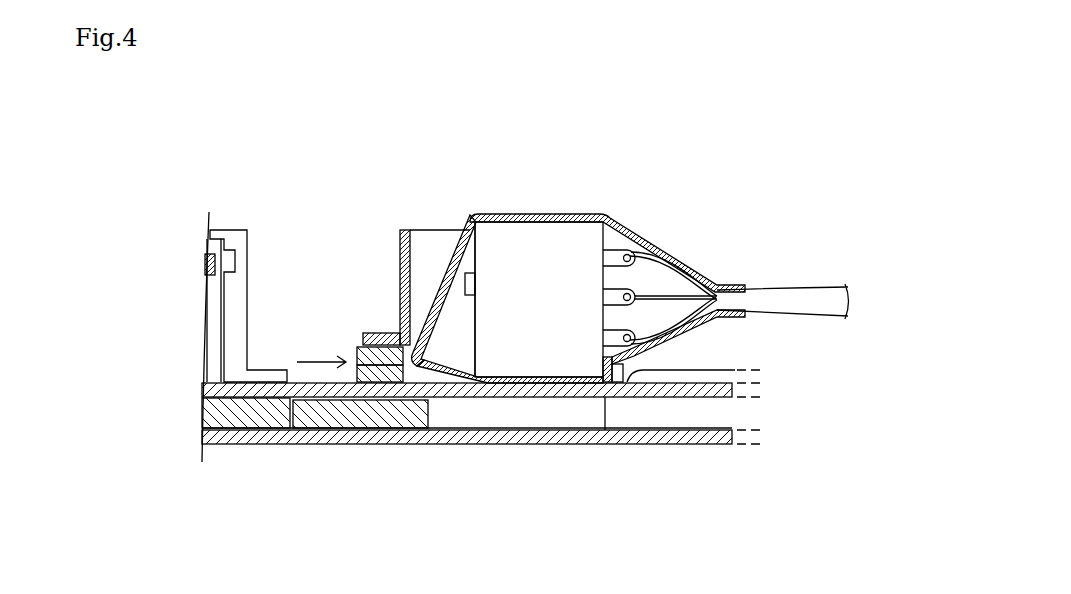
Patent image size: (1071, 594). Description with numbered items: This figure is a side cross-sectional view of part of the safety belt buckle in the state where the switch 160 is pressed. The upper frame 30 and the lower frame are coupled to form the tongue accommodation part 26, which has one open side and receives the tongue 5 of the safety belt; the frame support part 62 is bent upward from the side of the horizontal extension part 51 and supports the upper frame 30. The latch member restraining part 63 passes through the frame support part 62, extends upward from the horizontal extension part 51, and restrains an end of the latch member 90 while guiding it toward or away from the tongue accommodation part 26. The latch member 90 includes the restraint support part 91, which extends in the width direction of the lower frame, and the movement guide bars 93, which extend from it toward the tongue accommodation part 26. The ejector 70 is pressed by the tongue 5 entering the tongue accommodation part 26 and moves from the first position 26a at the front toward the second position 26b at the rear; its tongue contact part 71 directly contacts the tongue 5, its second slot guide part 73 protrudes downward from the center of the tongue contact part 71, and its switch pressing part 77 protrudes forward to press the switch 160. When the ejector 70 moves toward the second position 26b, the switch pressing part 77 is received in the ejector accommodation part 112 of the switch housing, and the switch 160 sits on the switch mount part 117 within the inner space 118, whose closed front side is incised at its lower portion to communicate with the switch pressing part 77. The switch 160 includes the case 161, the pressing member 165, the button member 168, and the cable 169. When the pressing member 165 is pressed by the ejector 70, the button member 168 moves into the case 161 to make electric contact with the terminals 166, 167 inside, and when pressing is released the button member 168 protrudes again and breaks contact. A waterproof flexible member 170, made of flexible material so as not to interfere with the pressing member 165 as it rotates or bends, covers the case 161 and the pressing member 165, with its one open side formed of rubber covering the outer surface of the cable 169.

The latch member restraining part 63 is at (233, 230).
The latch member 90 is at (149, 302).
The restraint support part 91 is at (207, 265).
The movement guide bar 93 is at (210, 307).
The ejector accommodation part 112 is at (373, 332).
The switch mount part 117 is at (399, 228).
The inner space 118 is at (438, 255).
The pressing member 165 is at (454, 268).
The flexible member 170 is at (468, 274).
The button member 168 is at (477, 280).
The switch 160 is at (633, 340).
The terminal 167 is at (648, 245).
The terminal 166 is at (692, 277).
The cable 169 is at (800, 297).
The case 161 is at (555, 362).
The tongue accommodation part 26 is at (466, 459).
The first position 26a is at (233, 432).
The second position 26b is at (510, 430).
The tongue 5 is at (272, 420).
The frame support part 62 is at (595, 405).
The horizontal extension part 51 is at (442, 438).
The upper frame 30 is at (693, 384).
The ejector 70 is at (360, 465).
The tongue contact part 71 is at (370, 418).
The second slot guide part 73 is at (366, 375).
The switch pressing part 77 is at (383, 356).